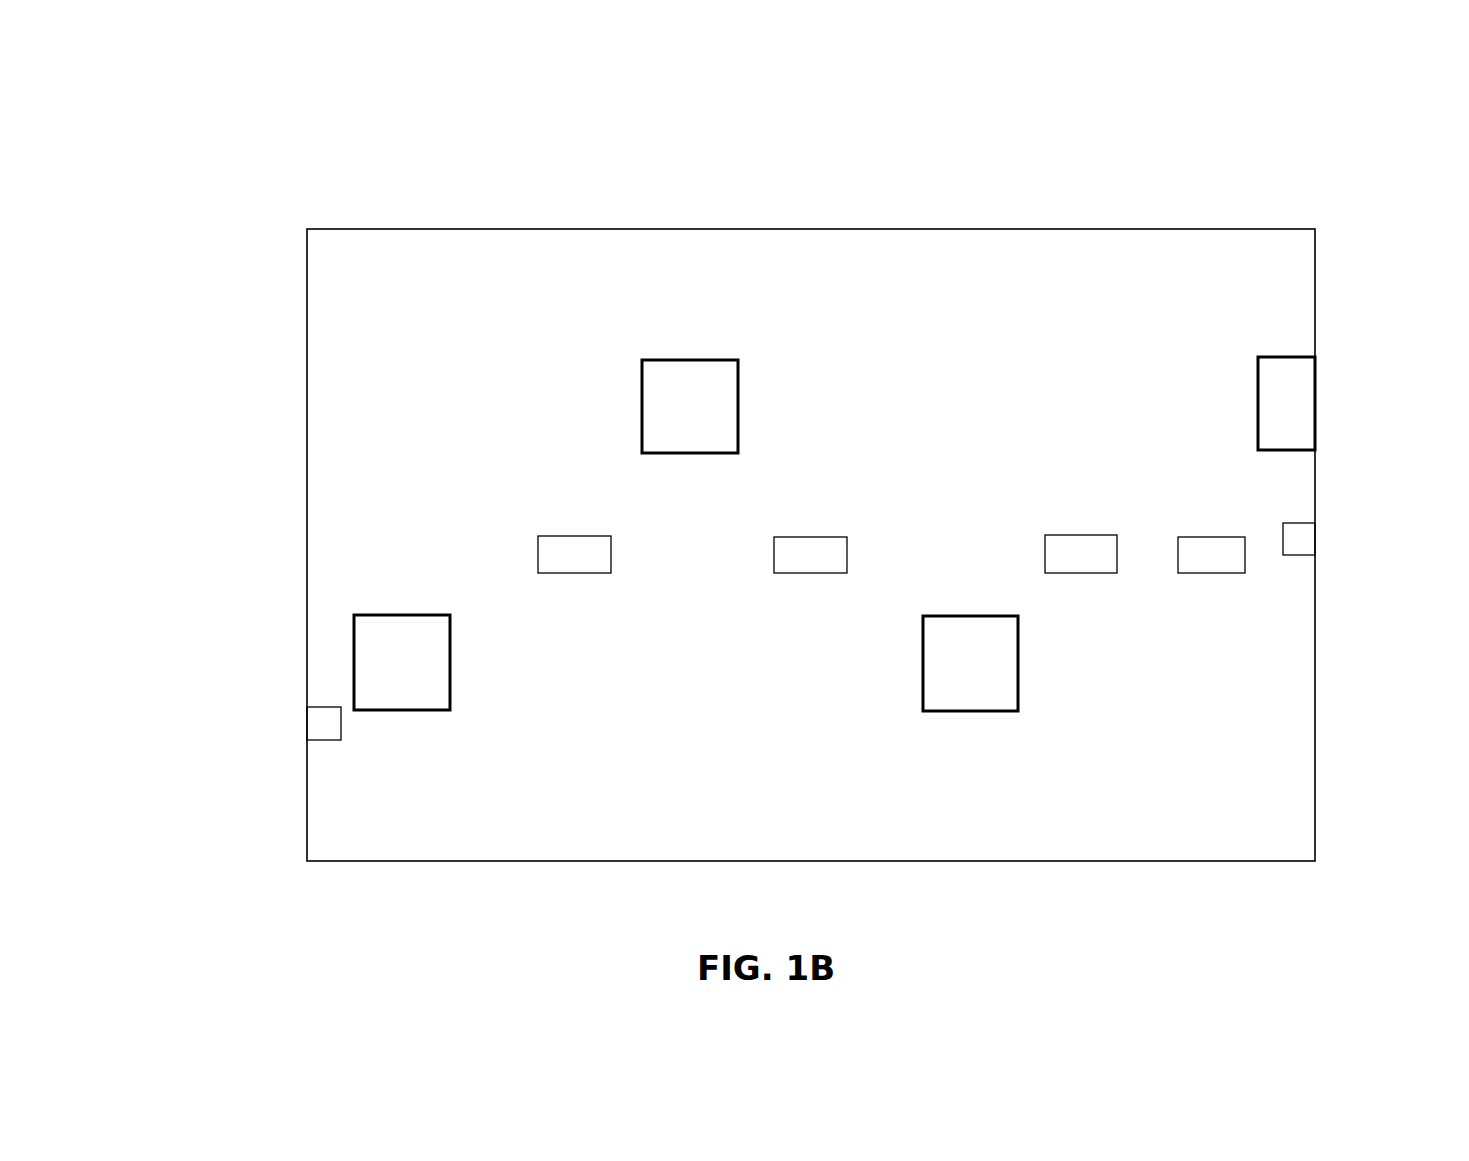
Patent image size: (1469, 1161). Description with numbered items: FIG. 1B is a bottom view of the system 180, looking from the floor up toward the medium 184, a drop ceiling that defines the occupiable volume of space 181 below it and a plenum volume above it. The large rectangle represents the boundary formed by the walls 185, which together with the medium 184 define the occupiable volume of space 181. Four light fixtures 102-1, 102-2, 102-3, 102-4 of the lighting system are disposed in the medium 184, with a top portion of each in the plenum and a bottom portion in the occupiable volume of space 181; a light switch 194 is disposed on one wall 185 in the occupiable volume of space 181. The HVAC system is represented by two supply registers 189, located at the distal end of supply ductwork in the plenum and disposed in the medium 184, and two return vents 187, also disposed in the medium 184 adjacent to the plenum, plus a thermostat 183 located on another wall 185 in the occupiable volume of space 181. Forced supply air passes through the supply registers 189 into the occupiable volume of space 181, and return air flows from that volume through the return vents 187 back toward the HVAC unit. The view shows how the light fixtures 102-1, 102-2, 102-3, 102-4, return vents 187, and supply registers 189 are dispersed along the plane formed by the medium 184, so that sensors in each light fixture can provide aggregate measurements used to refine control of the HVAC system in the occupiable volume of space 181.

The system 180 is at (1296, 102).
The occupiable volume of space 181 is at (474, 824).
The thermostat 183 is at (322, 707).
The medium 184 is at (447, 355).
The wall 185 is at (312, 585).
The return vent 187 is at (1059, 590).
The supply register 189 is at (1125, 753).
The light switch 194 is at (1300, 523).
The light fixture 102-1 is at (402, 662).
The light fixture 102-2 is at (690, 406).
The light fixture 102-3 is at (970, 663).
The light fixture 102-4 is at (1286, 403).